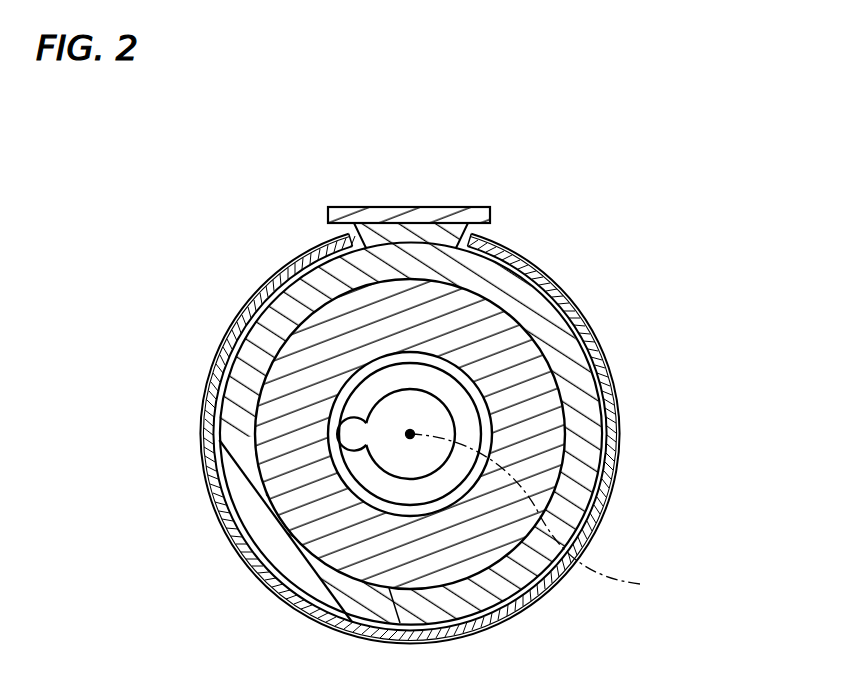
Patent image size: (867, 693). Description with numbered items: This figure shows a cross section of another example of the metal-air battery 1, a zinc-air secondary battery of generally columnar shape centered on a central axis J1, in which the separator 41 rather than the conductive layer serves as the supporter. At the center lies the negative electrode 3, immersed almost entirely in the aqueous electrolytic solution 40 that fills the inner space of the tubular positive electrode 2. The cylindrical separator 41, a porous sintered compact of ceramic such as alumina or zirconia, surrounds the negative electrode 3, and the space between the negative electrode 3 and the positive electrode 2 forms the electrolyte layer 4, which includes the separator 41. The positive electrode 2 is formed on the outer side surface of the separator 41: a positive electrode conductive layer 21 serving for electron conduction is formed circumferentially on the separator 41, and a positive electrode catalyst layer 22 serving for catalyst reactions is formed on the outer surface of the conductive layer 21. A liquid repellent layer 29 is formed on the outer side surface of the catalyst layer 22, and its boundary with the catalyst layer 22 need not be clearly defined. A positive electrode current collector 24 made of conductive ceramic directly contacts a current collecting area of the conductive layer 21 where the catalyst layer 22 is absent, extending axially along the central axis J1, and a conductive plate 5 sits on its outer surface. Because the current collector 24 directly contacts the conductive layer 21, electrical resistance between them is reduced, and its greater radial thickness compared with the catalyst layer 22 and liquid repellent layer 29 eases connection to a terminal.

The metal-air battery 1 is at (278, 153).
The positive electrode 2 is at (713, 422).
The negative electrode 3 is at (415, 372).
The electrolyte layer 4 is at (702, 320).
The conductive plate 5 is at (404, 212).
The positive electrode conductive layer 21 is at (596, 425).
The positive electrode catalyst layer 22 is at (609, 443).
The positive electrode current collector 24 is at (438, 236).
The liquid repellent layer 29 is at (615, 474).
The electrolytic solution 40 is at (430, 416).
The separator 41 is at (515, 395).
The central axis J1 is at (537, 515).